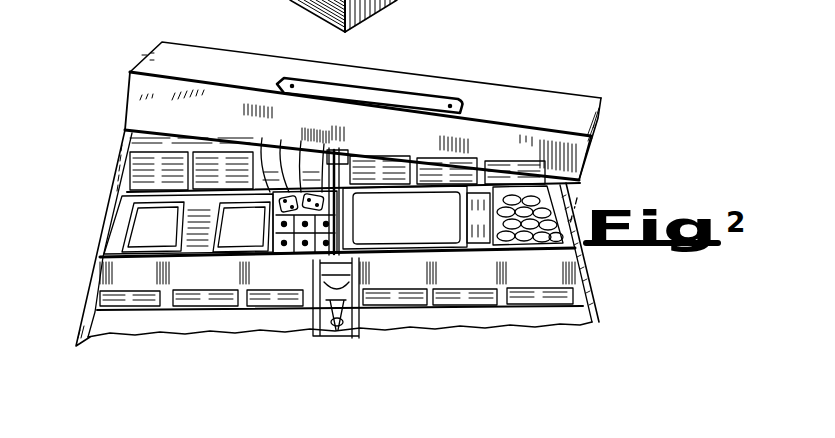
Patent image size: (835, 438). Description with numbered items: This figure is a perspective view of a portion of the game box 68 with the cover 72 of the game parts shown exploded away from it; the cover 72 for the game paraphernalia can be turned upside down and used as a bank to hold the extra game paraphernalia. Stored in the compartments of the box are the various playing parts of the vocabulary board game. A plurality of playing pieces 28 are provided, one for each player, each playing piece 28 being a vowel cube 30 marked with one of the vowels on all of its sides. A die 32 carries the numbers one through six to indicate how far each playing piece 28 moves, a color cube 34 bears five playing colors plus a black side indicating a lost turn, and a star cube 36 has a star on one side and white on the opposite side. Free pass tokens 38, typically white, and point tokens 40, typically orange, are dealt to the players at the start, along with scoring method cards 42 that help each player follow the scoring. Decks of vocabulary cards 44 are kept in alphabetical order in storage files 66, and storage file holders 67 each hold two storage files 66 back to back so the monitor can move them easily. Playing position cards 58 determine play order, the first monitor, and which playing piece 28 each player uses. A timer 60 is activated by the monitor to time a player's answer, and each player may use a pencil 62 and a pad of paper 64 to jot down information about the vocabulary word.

The playing piece 28 is at (262, 140).
The vowel cube 30 is at (282, 122).
The die 32 is at (341, 152).
The color cube 34 is at (426, 207).
The star cube 36 is at (316, 252).
The free pass token 38 is at (295, 136).
The point token 40 is at (531, 172).
The scoring method card 42 is at (456, 170).
The vocabulary card 44 is at (118, 175).
The playing position card 58 is at (106, 228).
The timer 60 is at (314, 316).
The pencil 62 is at (372, 144).
The pad of paper 64 is at (194, 252).
The storage file 66 is at (128, 134).
The storage file holder 67 is at (102, 274).
The game box 68 is at (78, 314).
The cover 72 is at (597, 137).